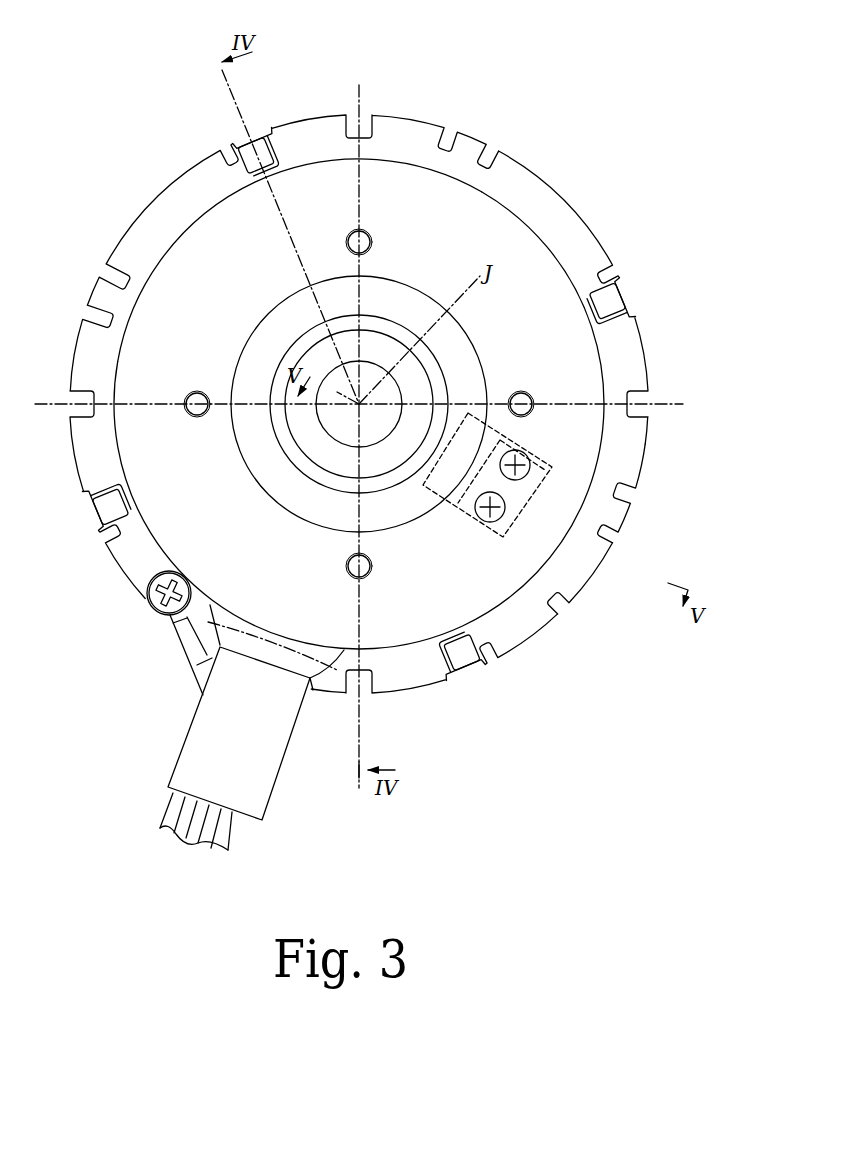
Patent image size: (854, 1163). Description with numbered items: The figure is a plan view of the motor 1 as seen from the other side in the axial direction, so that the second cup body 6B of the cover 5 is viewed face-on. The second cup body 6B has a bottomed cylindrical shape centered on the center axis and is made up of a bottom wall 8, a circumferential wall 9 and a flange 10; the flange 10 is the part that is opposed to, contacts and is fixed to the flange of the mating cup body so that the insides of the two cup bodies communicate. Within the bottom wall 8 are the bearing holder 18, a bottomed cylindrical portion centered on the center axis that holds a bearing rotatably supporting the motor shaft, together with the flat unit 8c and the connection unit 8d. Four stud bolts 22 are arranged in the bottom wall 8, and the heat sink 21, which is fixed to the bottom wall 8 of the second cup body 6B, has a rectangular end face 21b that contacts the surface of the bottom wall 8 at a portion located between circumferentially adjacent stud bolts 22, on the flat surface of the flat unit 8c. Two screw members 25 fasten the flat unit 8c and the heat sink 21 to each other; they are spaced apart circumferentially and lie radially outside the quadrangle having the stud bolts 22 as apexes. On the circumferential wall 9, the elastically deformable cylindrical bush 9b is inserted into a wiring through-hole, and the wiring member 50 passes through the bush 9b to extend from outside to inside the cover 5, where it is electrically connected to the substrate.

The motor 1 is at (614, 72).
The cover 5 is at (163, 184).
The second cup body 6B is at (394, 158).
The bottom wall 8 is at (550, 351).
The flat unit 8c is at (160, 330).
The connection unit 8d is at (270, 333).
The circumferential wall 9 is at (554, 255).
The bush 9b is at (207, 737).
The flange 10 is at (548, 198).
The bearing holder 18 is at (417, 428).
The heat sink 21 is at (490, 528).
The end face 21b is at (510, 497).
The stud bolt 22 is at (542, 392).
The screw member 25 is at (528, 472).
The wiring member 50 is at (178, 806).